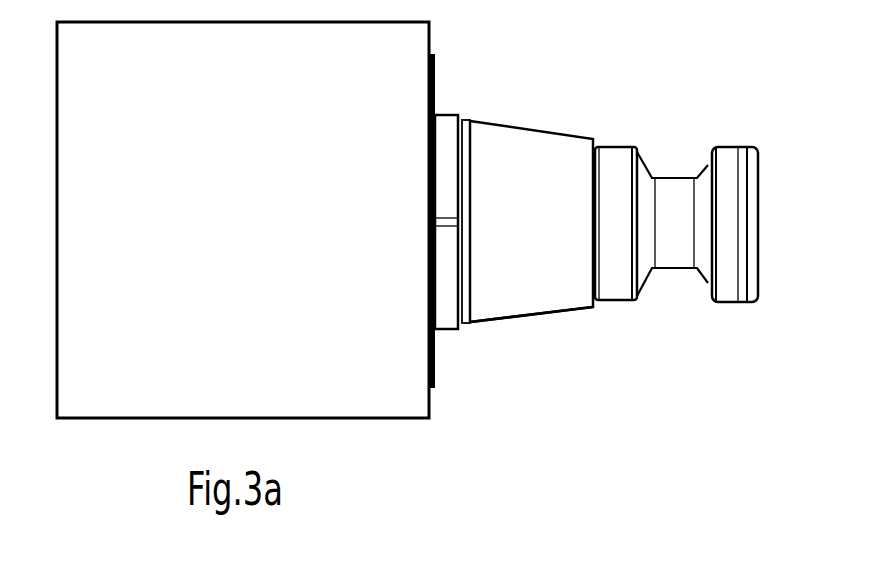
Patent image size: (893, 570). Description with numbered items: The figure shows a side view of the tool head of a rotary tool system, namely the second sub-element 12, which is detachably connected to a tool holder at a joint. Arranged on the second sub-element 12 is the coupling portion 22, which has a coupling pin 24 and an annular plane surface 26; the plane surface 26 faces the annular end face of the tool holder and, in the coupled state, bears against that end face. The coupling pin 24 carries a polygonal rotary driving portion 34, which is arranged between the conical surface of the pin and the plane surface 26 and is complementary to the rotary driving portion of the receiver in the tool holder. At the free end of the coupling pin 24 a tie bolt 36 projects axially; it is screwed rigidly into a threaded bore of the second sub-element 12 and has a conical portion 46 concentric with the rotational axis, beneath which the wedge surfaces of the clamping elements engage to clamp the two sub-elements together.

The second sub-element 12 is at (371, 422).
The annular plane surface 26 is at (435, 90).
The polygonal rotary driving portion 34 is at (452, 130).
The coupling portion 22 is at (554, 280).
The coupling pin 24 is at (517, 300).
The conical portion 46 is at (703, 172).
The tie bolt 36 is at (728, 168).